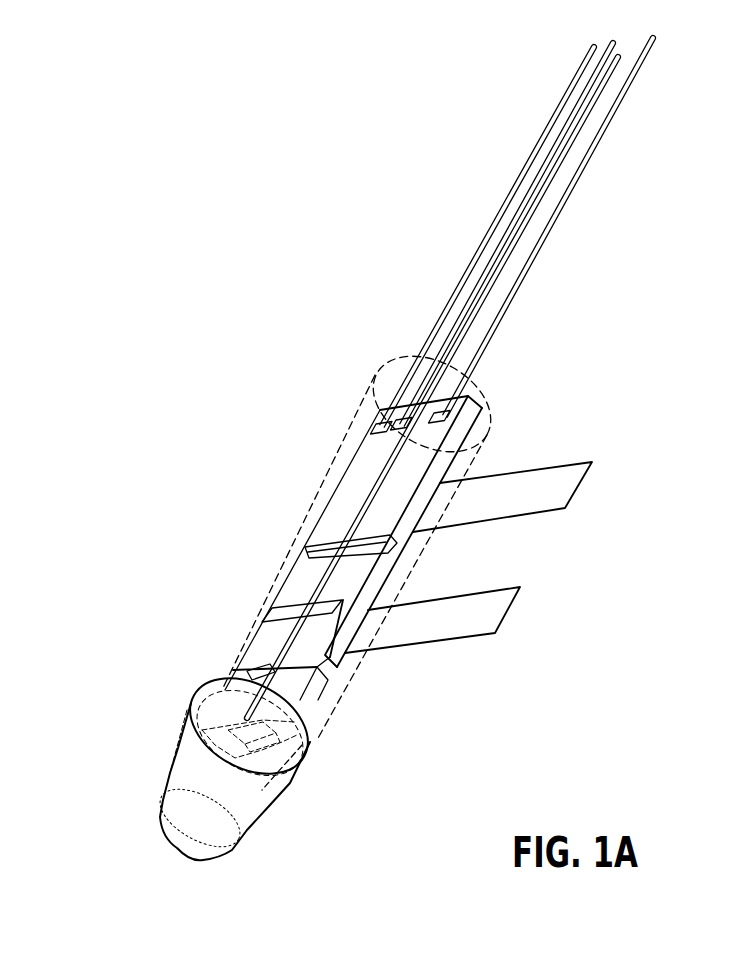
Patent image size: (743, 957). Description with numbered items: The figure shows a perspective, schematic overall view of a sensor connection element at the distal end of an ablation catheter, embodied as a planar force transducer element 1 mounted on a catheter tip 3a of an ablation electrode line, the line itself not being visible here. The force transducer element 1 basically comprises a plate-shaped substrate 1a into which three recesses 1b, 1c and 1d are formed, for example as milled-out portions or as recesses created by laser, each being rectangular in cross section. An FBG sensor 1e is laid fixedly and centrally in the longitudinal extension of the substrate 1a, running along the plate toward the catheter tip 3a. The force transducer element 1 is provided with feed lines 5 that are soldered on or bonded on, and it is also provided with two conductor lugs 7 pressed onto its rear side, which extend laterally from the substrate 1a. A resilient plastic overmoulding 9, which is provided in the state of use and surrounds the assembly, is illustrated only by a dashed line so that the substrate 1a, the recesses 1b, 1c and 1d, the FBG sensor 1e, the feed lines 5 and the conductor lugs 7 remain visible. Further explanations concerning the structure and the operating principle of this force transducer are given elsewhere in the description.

The force transducer element 1 is at (200, 464).
The plate-shaped substrate 1a is at (367, 453).
The recess 1b is at (307, 552).
The recess 1c is at (272, 611).
The recess 1d is at (246, 673).
The FBG sensor 1e is at (367, 507).
The catheter tip 3a is at (192, 777).
The feed lines 5 is at (450, 246).
The conductor lugs 7 is at (557, 490).
The resilient plastic overmoulding 9 is at (488, 403).